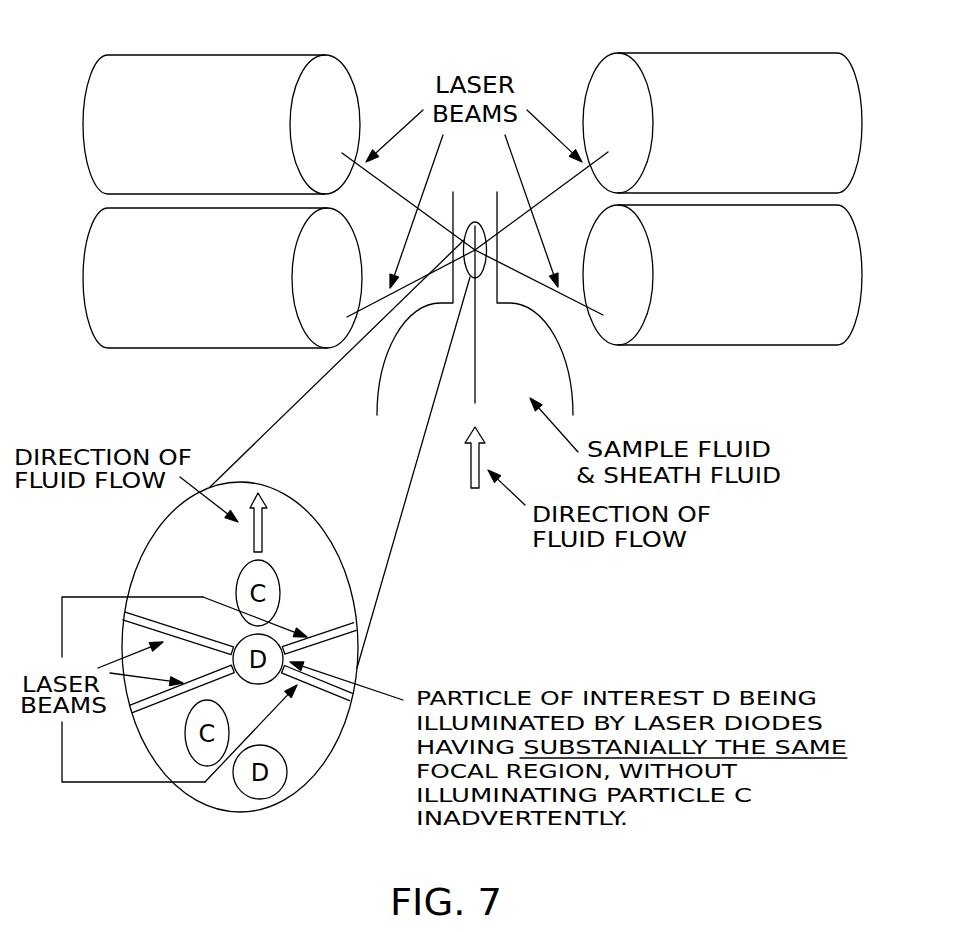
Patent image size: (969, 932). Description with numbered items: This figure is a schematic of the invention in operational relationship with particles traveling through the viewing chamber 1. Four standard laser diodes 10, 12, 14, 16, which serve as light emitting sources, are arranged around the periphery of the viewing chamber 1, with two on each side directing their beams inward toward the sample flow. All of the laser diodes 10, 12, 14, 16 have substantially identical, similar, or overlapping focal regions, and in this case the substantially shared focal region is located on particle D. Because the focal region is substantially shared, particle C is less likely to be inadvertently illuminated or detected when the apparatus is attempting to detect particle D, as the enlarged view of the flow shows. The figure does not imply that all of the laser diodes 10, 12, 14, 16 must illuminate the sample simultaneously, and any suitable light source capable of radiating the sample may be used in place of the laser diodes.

The viewing chamber 1 is at (574, 384).
The laser diode 10 is at (782, 325).
The laser diode 12 is at (788, 85).
The laser diode 14 is at (98, 130).
The laser diode 16 is at (107, 275).